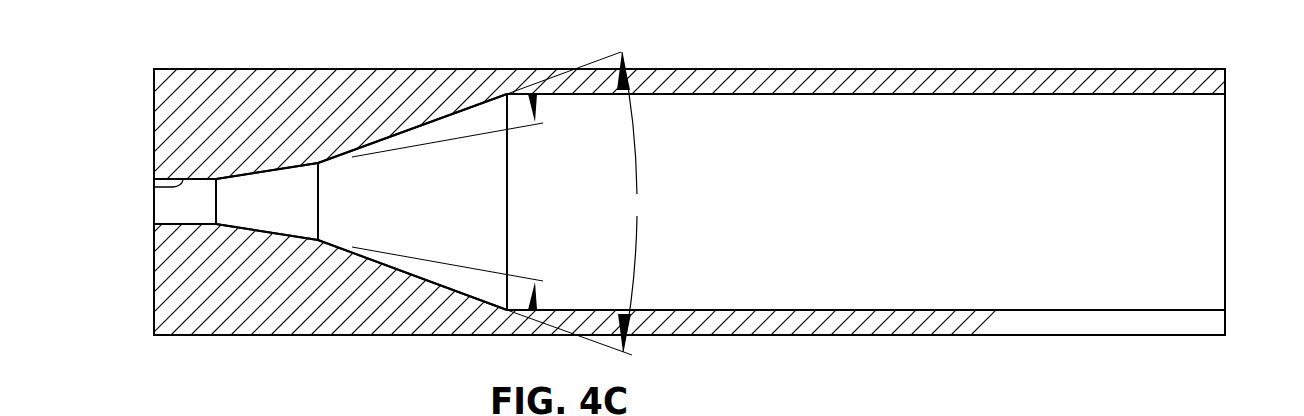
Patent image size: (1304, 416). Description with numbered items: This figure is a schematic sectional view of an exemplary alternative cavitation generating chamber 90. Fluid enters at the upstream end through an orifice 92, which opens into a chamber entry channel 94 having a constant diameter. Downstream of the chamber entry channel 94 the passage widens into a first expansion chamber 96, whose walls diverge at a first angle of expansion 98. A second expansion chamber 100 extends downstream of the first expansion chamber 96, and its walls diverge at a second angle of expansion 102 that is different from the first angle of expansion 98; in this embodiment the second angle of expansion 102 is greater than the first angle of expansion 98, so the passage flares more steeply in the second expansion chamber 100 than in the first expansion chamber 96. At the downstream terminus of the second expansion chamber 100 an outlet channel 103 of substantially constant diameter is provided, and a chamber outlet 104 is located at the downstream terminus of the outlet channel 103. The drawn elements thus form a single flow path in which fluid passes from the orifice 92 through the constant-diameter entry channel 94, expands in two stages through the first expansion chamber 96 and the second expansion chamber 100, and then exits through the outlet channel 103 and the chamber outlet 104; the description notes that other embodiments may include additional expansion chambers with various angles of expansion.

The cavitation generating chamber 90 is at (184, 36).
The orifice 92 is at (154, 203).
The chamber entry channel 94 is at (153, 187).
The first expansion chamber 96 is at (276, 170).
The first angle of expansion 98 is at (531, 92).
The second expansion chamber 100 is at (421, 279).
The second angle of expansion 102 is at (579, 203).
The outlet channel 103 is at (782, 309).
The chamber outlet 104 is at (1225, 178).